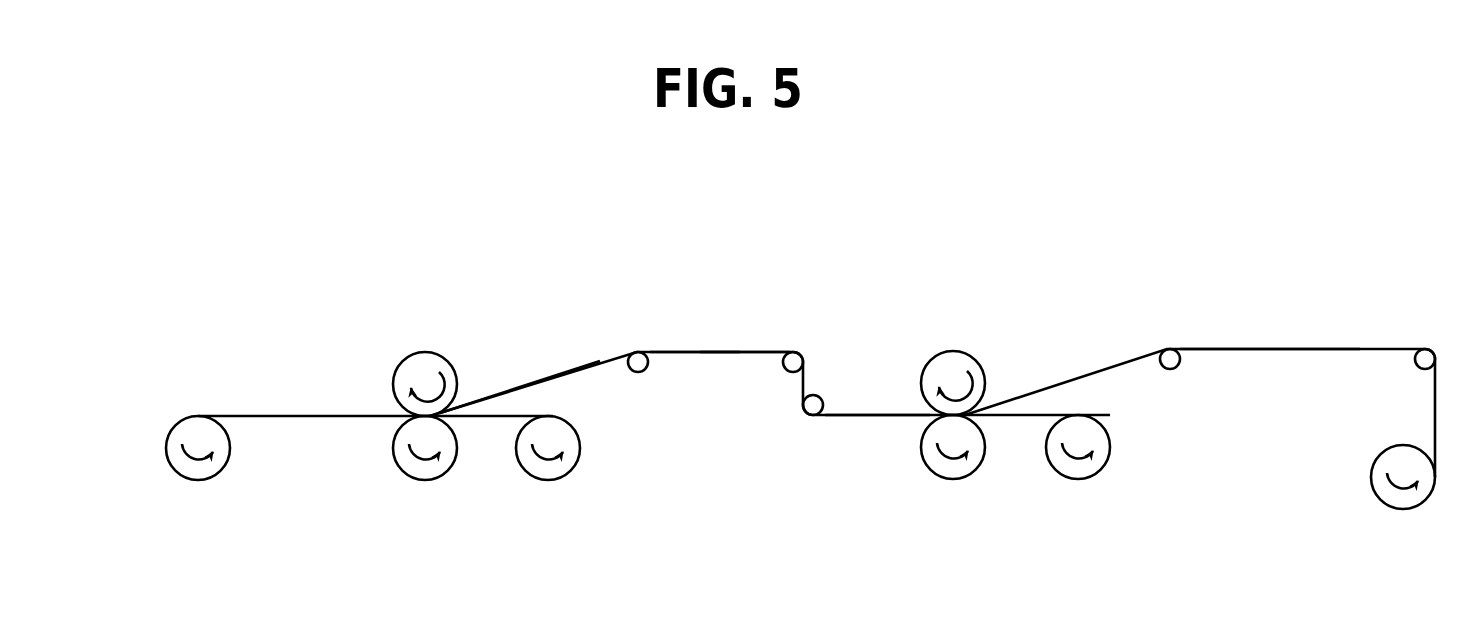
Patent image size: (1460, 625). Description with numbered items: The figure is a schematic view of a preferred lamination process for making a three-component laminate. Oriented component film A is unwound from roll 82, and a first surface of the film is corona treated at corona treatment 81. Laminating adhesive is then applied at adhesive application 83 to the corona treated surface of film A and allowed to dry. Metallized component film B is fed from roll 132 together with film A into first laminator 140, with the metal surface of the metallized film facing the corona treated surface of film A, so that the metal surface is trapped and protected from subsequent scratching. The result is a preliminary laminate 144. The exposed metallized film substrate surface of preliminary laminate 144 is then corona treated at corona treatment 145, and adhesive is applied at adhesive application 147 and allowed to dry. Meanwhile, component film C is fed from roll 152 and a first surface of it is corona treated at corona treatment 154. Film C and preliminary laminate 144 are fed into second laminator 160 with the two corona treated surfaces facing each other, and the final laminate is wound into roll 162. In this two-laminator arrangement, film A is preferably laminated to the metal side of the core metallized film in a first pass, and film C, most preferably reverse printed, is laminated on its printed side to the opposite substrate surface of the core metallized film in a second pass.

The roll 162 is at (202, 412).
The second laminator 160 is at (426, 348).
The roll 152 is at (523, 474).
The corona treatment 154 is at (519, 408).
The adhesive application 147 is at (692, 356).
The corona treatment 145 is at (743, 357).
The preliminary laminate 144 is at (857, 412).
The first laminator 140 is at (969, 345).
The roll 132 is at (1110, 461).
The adhesive application 83 is at (1223, 354).
The corona treatment 81 is at (1310, 354).
The roll 82 is at (1369, 493).